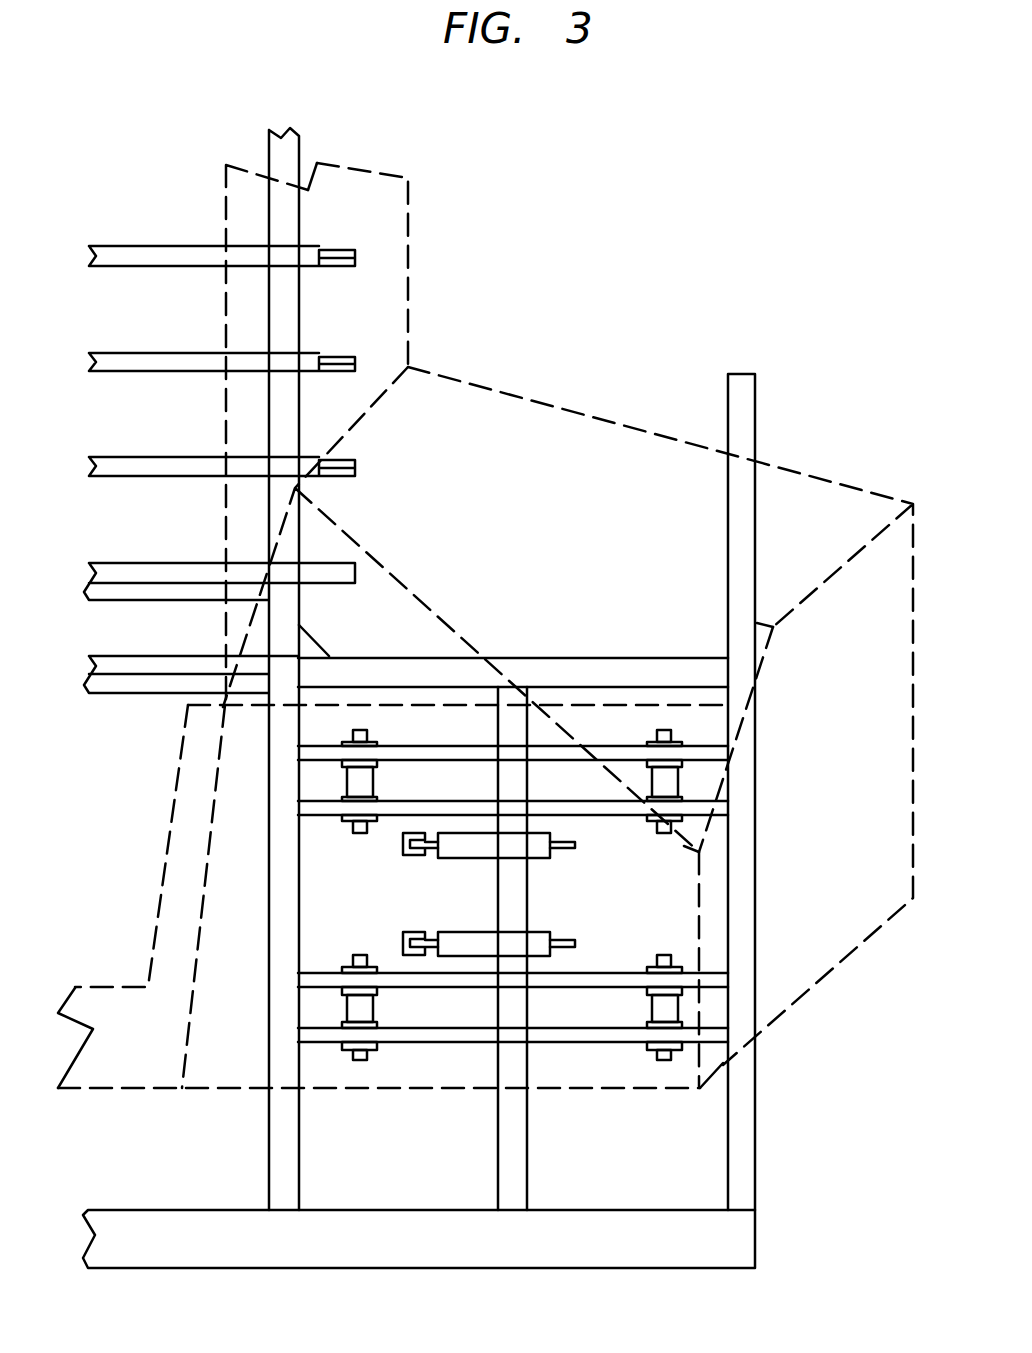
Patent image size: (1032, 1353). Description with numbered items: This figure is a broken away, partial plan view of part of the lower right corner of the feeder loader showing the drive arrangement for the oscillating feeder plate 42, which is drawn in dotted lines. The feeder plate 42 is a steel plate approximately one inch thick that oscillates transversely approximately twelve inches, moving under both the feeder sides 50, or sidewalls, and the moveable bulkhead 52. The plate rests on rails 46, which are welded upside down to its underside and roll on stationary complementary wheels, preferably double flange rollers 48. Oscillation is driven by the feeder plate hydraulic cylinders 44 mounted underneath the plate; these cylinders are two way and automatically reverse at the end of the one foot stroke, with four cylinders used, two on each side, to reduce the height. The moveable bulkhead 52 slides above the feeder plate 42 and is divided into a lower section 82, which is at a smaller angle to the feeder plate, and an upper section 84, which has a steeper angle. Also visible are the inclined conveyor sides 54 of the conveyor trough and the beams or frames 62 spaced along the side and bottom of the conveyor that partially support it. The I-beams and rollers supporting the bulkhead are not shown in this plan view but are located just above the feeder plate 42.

The feeder plate 42 is at (152, 1054).
The hydraulic cylinders 44 is at (470, 858).
The rails 46 is at (605, 973).
The double flange rollers 48 is at (345, 832).
The feeder sides 50 is at (852, 851).
The moveable bulkhead 52 is at (808, 470).
The conveyor sides 54 is at (389, 223).
The beams or frames 62 is at (163, 351).
The lower section 82 is at (489, 629).
The upper section 84 is at (821, 568).